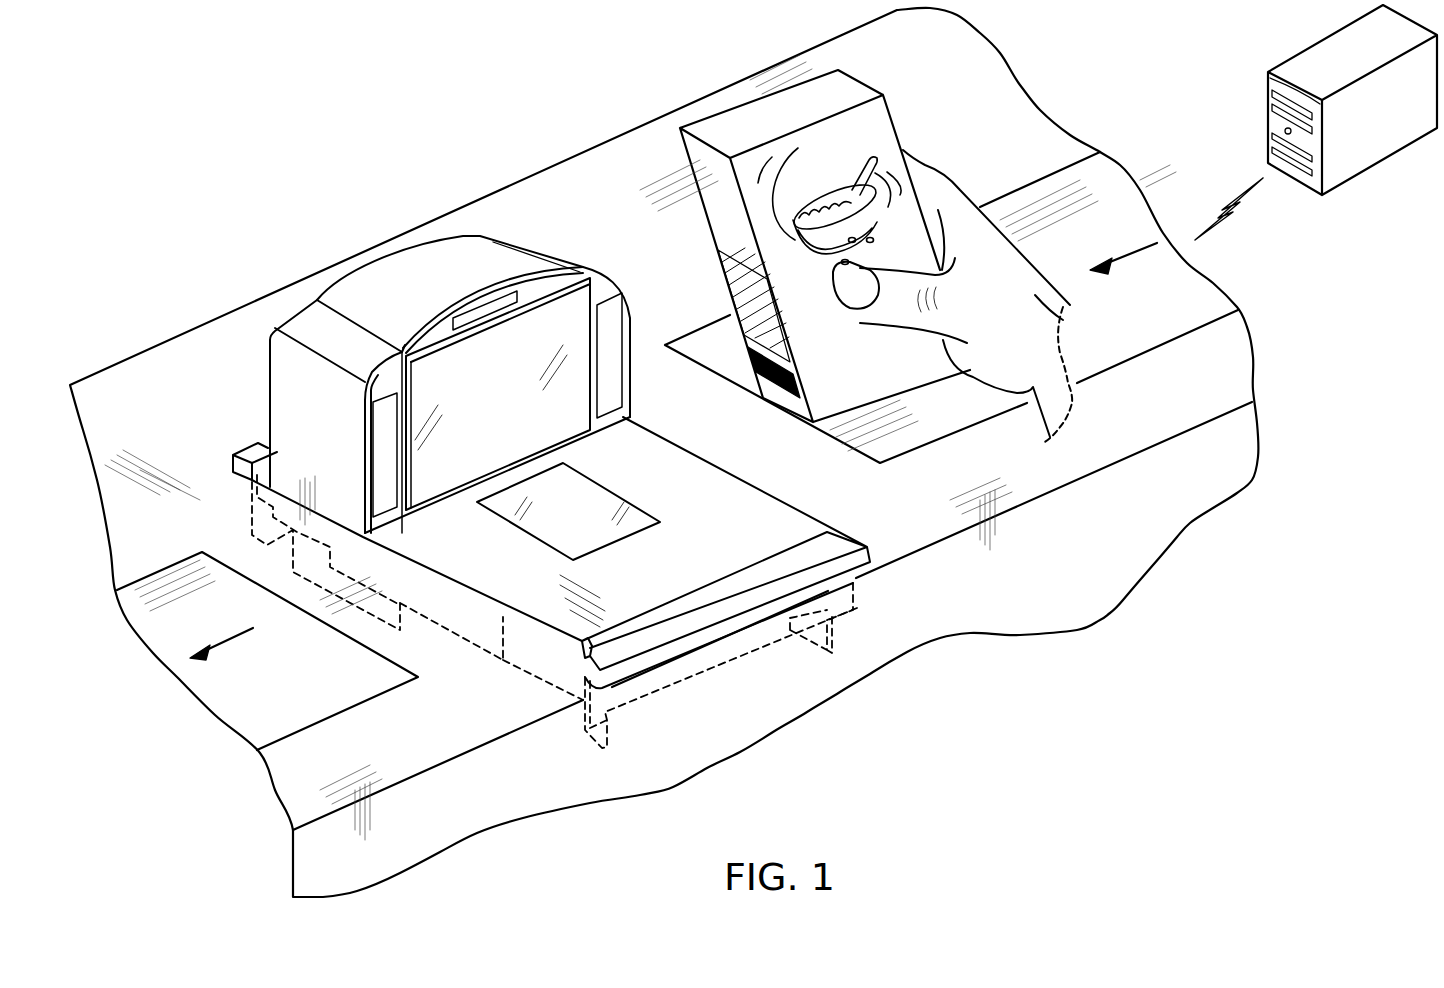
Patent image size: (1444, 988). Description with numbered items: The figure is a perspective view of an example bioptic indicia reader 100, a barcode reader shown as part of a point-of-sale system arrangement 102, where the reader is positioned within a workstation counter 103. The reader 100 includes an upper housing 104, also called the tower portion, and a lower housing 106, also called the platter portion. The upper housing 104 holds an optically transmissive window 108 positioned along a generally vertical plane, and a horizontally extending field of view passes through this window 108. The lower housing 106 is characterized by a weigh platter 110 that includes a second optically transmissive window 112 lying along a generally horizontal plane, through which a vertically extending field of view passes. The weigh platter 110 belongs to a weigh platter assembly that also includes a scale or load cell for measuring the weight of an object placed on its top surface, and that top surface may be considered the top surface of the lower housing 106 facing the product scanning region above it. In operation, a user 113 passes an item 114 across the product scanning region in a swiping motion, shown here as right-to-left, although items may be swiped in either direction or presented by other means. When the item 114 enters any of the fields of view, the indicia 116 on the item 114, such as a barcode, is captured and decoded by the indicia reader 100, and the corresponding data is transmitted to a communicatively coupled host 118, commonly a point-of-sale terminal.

The bioptic indicia reader 100 is at (165, 283).
The point-of-sale (POS) system arrangement 102 is at (552, 150).
The workstation counter 103 is at (166, 408).
The upper housing 104 is at (375, 283).
The lower housing 106 is at (518, 665).
The optically transmissive window 108 is at (485, 365).
The weigh platter 110 is at (733, 564).
The optically transmissive window 112 is at (545, 515).
The user 113 is at (1063, 320).
The item 114 is at (748, 115).
The indicia 116 is at (805, 380).
The host 118 is at (1268, 117).